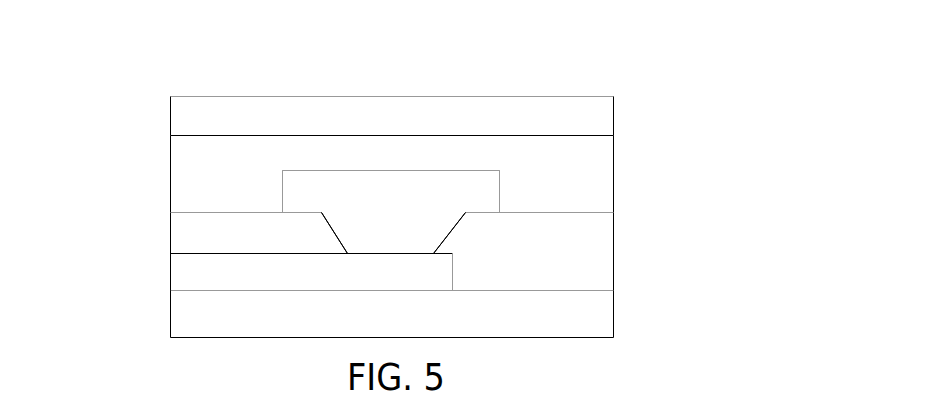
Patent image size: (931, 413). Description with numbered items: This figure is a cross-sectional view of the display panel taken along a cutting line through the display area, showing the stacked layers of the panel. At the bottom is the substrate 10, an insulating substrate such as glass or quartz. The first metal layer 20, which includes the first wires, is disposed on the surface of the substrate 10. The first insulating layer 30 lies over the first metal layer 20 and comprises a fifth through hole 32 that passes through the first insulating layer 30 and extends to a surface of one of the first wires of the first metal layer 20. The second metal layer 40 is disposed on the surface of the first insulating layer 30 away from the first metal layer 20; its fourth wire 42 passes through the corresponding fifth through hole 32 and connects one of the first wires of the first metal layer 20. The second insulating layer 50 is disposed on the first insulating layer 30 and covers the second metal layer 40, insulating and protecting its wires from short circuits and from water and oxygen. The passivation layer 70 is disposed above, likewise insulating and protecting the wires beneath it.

The substrate 10 is at (456, 293).
The first metal layer 20 is at (250, 255).
The first insulating layer 30 is at (456, 235).
The fifth through hole 32 is at (411, 145).
The second metal layer 40 is at (391, 192).
The fourth wire 42 is at (316, 127).
The second insulating layer 50 is at (456, 158).
The passivation layer 70 is at (456, 90).